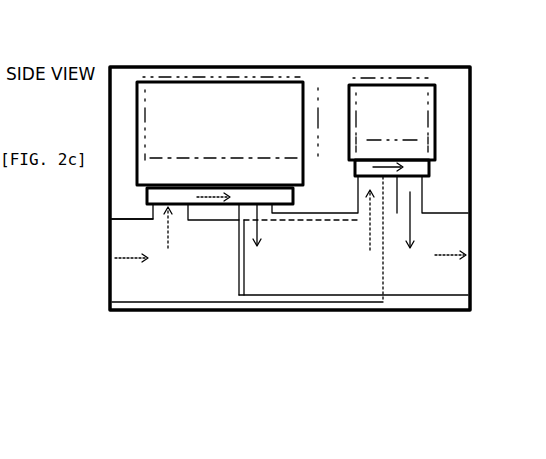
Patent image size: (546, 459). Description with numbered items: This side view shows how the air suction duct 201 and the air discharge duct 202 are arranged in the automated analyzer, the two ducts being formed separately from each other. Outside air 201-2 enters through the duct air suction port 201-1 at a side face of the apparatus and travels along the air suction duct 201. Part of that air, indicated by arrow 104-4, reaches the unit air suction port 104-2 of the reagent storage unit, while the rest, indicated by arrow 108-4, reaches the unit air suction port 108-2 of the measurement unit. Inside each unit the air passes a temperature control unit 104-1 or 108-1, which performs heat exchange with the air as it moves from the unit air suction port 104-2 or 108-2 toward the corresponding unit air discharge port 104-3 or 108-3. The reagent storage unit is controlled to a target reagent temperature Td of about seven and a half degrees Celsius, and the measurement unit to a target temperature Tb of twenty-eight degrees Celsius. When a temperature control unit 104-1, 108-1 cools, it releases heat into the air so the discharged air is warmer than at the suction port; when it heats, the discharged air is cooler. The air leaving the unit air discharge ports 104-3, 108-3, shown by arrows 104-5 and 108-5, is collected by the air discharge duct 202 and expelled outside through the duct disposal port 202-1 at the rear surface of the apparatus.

The temperature control unit 104-1 is at (193, 196).
The unit air suction port 104-2 is at (157, 207).
The unit air discharge port 104-3 is at (253, 203).
The arrow 104-4 is at (172, 227).
The arrow 104-5 is at (260, 230).
The temperature control unit 108-1 is at (381, 162).
The unit air suction port 108-2 is at (362, 173).
The unit air discharge port 108-3 is at (414, 188).
The arrow 108-4 is at (370, 213).
The arrow 108-5 is at (412, 225).
The air suction duct 201 is at (153, 302).
The duct air suction port 201-1 is at (108, 273).
The air 201-2 is at (138, 262).
The air discharge duct 202 is at (402, 295).
The duct disposal port 202-1 is at (472, 255).